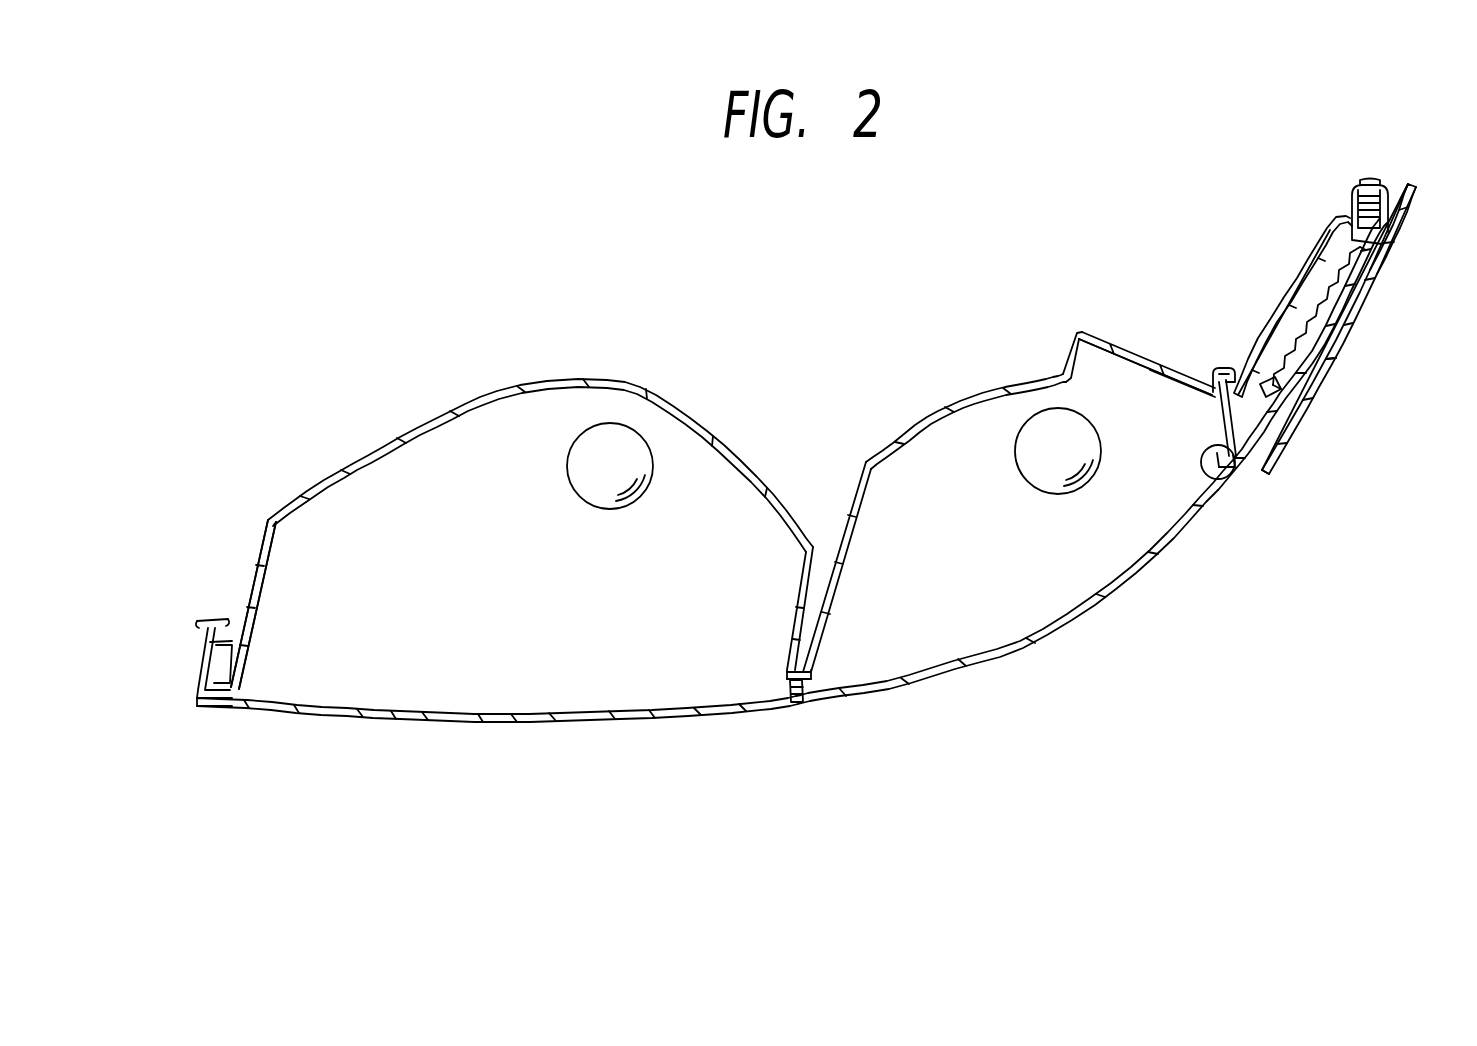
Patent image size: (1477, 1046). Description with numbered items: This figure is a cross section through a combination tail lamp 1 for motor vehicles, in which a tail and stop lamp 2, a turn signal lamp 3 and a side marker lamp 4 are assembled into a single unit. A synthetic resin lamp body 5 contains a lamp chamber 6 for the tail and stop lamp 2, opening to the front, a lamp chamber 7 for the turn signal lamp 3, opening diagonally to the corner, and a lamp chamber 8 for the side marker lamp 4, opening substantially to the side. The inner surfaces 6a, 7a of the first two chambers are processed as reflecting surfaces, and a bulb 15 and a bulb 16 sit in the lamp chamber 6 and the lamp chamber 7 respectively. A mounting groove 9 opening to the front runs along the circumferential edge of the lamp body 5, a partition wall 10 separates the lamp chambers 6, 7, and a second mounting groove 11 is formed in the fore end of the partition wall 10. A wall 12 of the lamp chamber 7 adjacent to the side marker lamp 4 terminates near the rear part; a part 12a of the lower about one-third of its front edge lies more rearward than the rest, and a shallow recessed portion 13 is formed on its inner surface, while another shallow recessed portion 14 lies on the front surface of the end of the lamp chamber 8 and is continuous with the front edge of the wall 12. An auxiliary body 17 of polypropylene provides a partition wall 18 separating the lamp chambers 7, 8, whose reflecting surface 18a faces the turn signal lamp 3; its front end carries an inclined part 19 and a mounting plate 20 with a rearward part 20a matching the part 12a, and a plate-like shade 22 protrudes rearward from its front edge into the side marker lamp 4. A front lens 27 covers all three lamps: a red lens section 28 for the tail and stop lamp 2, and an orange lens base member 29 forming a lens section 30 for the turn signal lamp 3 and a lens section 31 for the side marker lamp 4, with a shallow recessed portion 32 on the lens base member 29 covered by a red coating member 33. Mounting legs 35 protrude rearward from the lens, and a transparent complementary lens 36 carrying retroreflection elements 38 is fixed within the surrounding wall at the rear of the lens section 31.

The combination tail lamp 1 is at (652, 742).
The tail and stop lamp 2 is at (552, 645).
The turn signal lamp 3 is at (1073, 552).
The side marker lamp 4 is at (1342, 410).
The lamp body 5 is at (486, 393).
The lamp chamber 6 is at (656, 394).
The inner surface 6a is at (379, 466).
The lamp chamber 7 is at (968, 398).
The inner surface 7a is at (894, 460).
The lamp chamber 8 is at (1302, 292).
The mounting groove 9 is at (238, 666).
The partition wall 10 is at (799, 600).
The mounting groove 11 is at (782, 706).
The wall 12 is at (1142, 358).
The part 12a is at (1186, 382).
The shallow recessed portion 13 is at (1100, 348).
The shallow recessed portion 14 is at (1224, 368).
The bulb 15 is at (570, 478).
The bulb 16 is at (1015, 453).
The auxiliary body 17 is at (1226, 482).
The partition wall 18 is at (1172, 387).
The surface 18a is at (1145, 371).
The inclined part 19 is at (1240, 470).
The mounting plate 20 is at (1277, 397).
The part 20a is at (1222, 423).
The shade 22 is at (1345, 302).
The front lens 27 is at (420, 720).
The lens section 28 is at (298, 706).
The lens base member 29 is at (883, 690).
The lens section 30 is at (1000, 655).
The lens section 31 is at (1333, 365).
The shallow recessed portion 32 is at (1390, 252).
The coating member 33 is at (1266, 442).
The mounting leg 35 is at (200, 658).
The complementary lens 36 is at (1284, 342).
The retroreflection elements 38 is at (1332, 262).